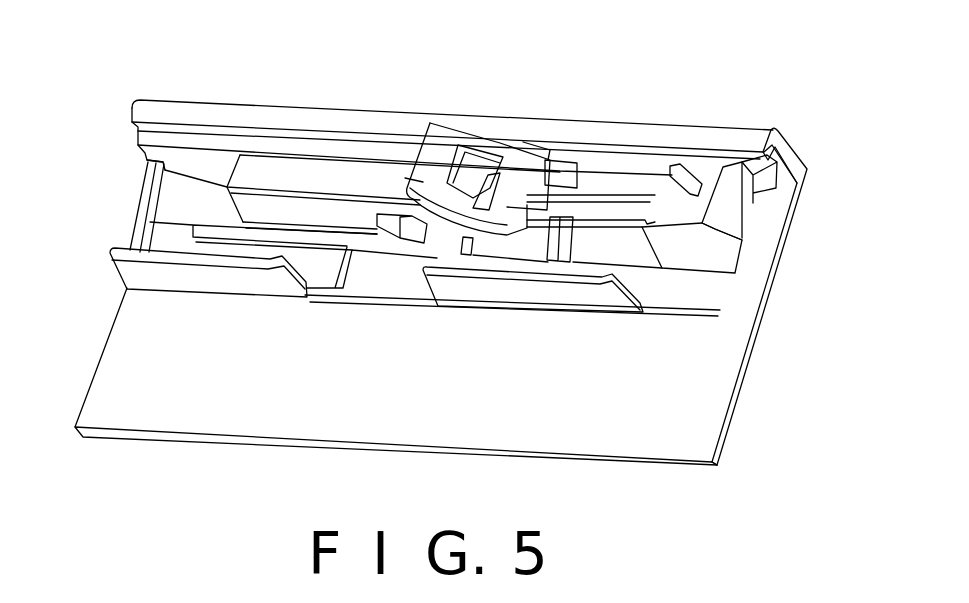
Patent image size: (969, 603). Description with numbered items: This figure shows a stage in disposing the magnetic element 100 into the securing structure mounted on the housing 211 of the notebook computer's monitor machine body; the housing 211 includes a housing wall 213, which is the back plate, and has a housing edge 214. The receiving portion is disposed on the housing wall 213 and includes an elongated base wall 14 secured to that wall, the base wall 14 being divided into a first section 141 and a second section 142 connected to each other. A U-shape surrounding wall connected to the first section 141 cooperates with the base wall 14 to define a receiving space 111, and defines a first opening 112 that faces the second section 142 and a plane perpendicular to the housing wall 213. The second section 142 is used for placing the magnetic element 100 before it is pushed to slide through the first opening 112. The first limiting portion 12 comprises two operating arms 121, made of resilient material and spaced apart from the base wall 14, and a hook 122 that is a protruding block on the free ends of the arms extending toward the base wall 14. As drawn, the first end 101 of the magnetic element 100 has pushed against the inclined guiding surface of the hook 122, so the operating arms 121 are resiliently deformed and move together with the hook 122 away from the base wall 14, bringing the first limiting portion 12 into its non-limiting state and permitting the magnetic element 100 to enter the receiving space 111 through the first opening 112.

The first limiting portion 12 is at (416, 123).
The base wall 14 is at (162, 192).
The magnetic element 100 is at (265, 170).
The first end 101 is at (500, 190).
The receiving space 111 is at (700, 185).
The first opening 112 is at (520, 142).
The operating arms 121 is at (463, 200).
The hook 122 is at (423, 182).
The first section 141 is at (562, 182).
The second section 142 is at (172, 125).
The housing 211 is at (807, 213).
The housing wall 213 is at (727, 423).
The housing edge 214 is at (787, 153).